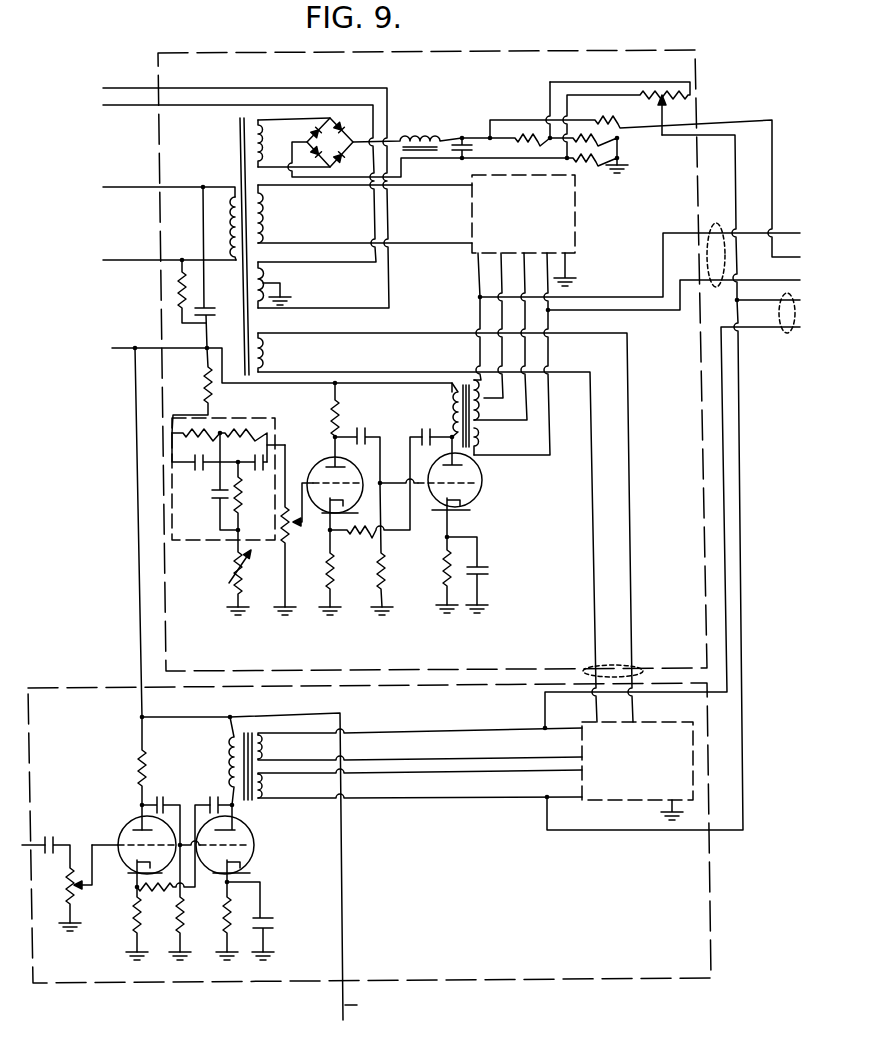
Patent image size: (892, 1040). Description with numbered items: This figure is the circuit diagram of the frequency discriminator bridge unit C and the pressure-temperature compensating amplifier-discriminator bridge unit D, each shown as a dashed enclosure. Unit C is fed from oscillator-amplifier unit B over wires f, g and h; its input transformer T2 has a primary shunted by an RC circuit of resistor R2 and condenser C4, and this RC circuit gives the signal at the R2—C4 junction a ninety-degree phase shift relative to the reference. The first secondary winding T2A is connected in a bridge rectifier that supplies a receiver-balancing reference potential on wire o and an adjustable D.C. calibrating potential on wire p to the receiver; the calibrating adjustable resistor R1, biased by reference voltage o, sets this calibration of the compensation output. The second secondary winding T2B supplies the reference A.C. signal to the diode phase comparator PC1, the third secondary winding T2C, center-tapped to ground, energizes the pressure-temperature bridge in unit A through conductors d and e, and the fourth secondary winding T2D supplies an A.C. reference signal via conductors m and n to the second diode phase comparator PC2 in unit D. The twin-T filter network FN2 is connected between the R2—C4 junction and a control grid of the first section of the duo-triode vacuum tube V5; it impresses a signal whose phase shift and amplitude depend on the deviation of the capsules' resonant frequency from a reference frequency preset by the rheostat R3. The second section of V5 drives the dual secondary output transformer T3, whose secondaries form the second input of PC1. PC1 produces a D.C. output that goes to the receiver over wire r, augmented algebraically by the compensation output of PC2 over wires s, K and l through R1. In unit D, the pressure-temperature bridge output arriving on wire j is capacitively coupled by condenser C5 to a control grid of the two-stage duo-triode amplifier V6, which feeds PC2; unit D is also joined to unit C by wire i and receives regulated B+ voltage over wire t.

The frequency discriminator bridge unit C is at (432, 360).
The pressure-temperature compensating amplifier-discriminator bridge unit D is at (369, 833).
The conductor d is at (134, 88).
The conductor e is at (138, 105).
The wire f is at (133, 187).
The wire g is at (133, 260).
The wire h is at (125, 348).
The wire i is at (135, 407).
The wire j is at (36, 845).
The conductor K is at (764, 327).
The conductor l is at (768, 300).
The conductor m is at (335, 372).
The conductor n is at (338, 333).
The wire o is at (511, 120).
The wire p is at (738, 188).
The wire r is at (504, 298).
The wire s is at (570, 311).
The wire t is at (356, 1006).
The input transformer T2 is at (236, 182).
The first secondary winding T2A is at (261, 130).
The second secondary winding T2B is at (365, 214).
The third secondary winding T2C is at (265, 272).
The fourth secondary winding T2D is at (279, 352).
The dual secondary output transformer T3 is at (463, 380).
The condenser C4 is at (211, 305).
The condenser C5 is at (54, 841).
The calibrating adjustable resistor R1 is at (655, 98).
The resistor R2 is at (179, 313).
The rheostat R3 is at (233, 567).
The duo-triode vacuum tube V5 is at (389, 452).
The two-stage duo-triode amplifier V6 is at (190, 814).
The twin-T filter network FN2 is at (213, 523).
The diode phase comparator PC1 is at (548, 224).
The second diode phase comparator PC2 is at (663, 776).